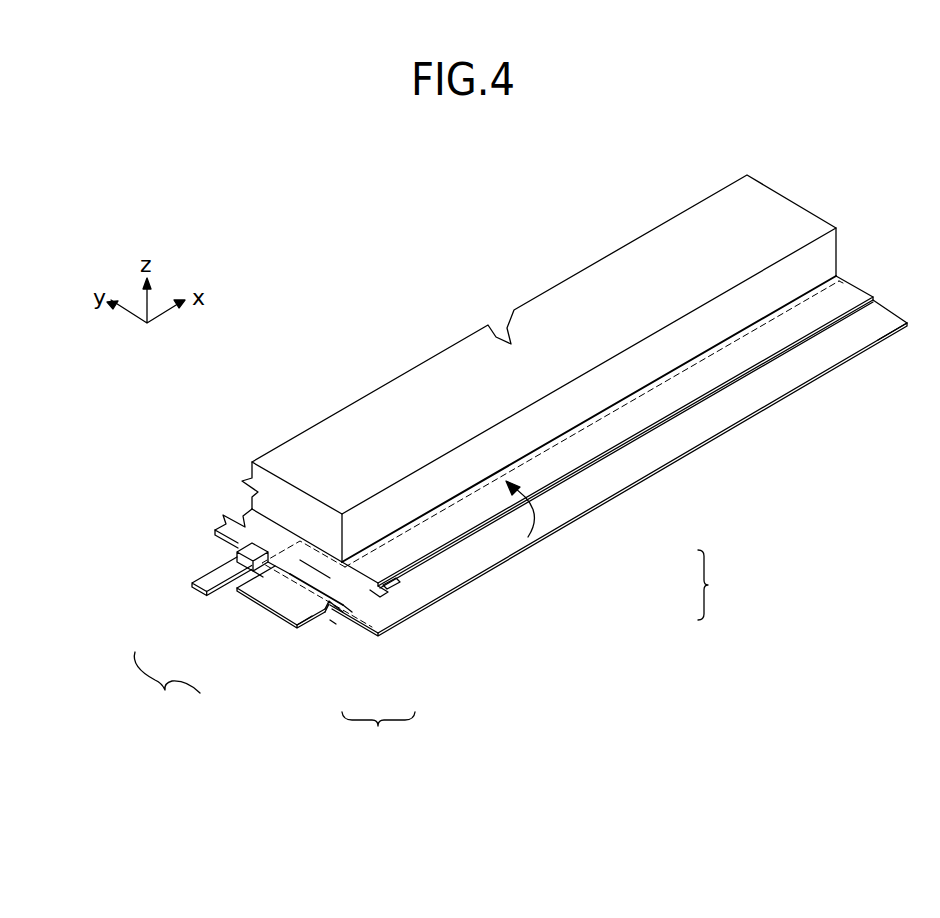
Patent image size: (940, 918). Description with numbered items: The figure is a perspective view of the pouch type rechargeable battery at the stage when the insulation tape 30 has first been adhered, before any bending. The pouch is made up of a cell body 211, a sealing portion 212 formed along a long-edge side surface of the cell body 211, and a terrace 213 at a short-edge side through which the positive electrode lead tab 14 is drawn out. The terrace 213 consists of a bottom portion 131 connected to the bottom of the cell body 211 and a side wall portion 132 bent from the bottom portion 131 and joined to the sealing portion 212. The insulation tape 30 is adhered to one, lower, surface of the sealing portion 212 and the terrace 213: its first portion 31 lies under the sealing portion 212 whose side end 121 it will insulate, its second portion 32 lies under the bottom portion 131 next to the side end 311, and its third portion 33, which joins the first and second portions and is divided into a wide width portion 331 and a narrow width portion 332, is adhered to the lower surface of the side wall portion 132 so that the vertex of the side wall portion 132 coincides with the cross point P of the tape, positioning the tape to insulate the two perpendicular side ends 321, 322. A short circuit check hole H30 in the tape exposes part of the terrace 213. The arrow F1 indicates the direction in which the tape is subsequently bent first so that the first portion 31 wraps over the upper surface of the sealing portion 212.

The cell body 211 is at (758, 208).
The sealing portion 212 is at (838, 300).
The terrace 213 is at (192, 611).
The side end of the sealing portion 121 is at (805, 342).
The positive electrode lead tab 14 is at (212, 580).
The bottom portion 131 is at (282, 577).
The side wall portion 132 is at (288, 618).
The insulation tape 30 is at (715, 585).
The first portion 31 is at (502, 540).
The side end of the bottom portion 311 is at (298, 565).
The second portion 32 is at (292, 627).
The side end of the side wall portion 321 is at (308, 625).
The side end of the side wall portion 322 is at (383, 623).
The third portion 33 is at (508, 676).
The wide width portion 331 is at (377, 634).
The narrow width portion 332 is at (350, 622).
The short circuit check hole H30 is at (397, 582).
The cross point P is at (333, 628).
The first bending direction F1 is at (533, 515).